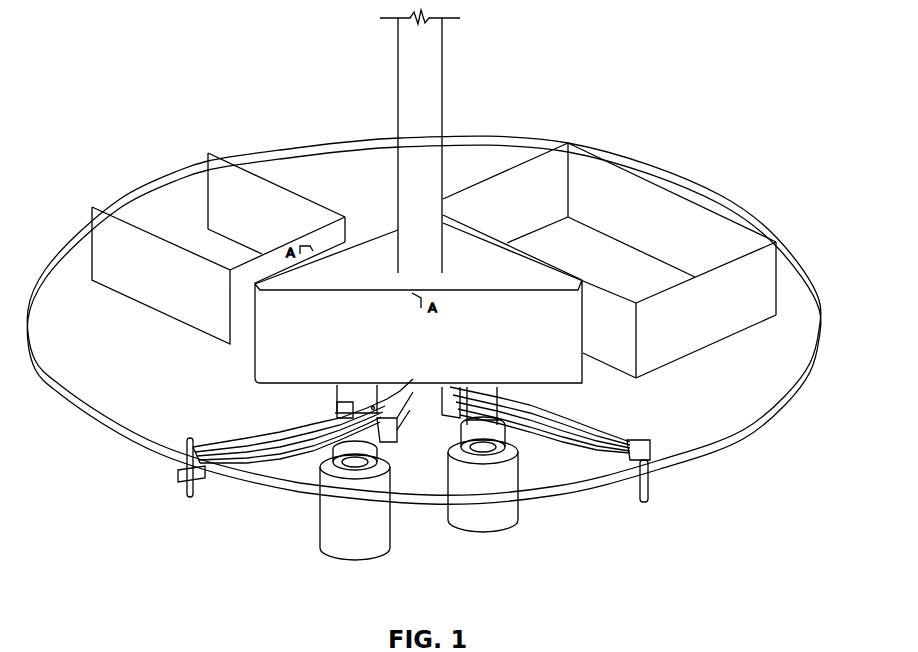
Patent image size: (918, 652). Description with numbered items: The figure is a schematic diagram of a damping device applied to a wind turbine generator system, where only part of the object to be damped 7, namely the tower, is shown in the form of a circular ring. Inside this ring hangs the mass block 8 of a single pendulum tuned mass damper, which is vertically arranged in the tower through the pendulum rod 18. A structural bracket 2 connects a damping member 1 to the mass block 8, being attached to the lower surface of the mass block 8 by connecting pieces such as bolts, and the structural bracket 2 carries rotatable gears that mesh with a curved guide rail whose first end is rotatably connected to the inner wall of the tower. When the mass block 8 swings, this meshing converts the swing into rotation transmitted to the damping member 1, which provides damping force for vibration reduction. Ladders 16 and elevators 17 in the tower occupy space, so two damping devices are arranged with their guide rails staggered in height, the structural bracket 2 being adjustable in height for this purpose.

The damping member 1 is at (505, 518).
The structural bracket 2 is at (210, 442).
The object to be damped 7 is at (813, 363).
The mass block 8 is at (553, 373).
The ladders 16 is at (262, 202).
The elevators 17 is at (685, 217).
The pendulum rod 18 is at (428, 87).